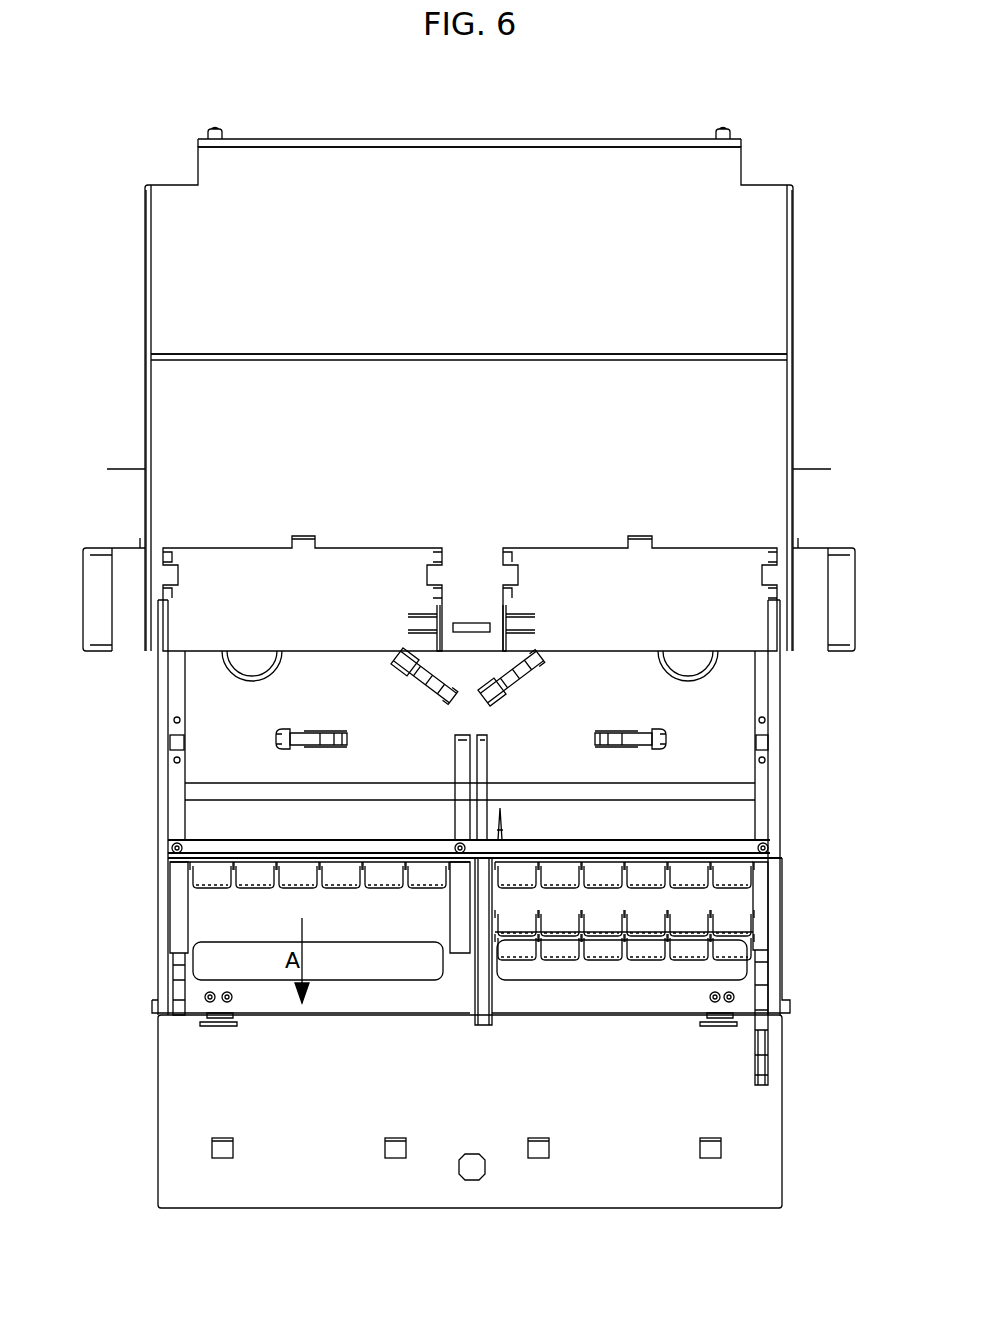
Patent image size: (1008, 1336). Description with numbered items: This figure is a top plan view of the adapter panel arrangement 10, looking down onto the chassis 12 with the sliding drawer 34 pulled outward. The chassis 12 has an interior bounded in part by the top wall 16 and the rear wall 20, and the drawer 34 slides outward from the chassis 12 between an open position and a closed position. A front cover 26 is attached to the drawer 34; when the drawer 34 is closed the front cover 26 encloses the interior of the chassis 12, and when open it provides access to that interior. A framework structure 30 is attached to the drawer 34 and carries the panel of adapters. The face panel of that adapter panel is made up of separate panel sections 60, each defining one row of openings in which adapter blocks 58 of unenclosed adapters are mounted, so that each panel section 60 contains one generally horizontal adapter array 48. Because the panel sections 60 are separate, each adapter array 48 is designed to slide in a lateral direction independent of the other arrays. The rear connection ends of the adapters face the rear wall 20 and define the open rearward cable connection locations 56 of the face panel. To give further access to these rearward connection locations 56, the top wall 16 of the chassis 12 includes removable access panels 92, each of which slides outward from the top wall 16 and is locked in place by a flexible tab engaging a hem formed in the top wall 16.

The adapter panel arrangement 10 is at (111, 357).
The chassis 12 is at (727, 423).
The top wall 16 is at (466, 428).
The rear wall 20 is at (551, 139).
The front cover 26 is at (294, 1175).
The framework structure 30 is at (765, 800).
The sliding drawer 34 is at (165, 922).
The adapter array 48 is at (762, 873).
The open rearward cable connection locations 56 is at (576, 832).
The adapter block 58 is at (688, 942).
The panel section 60 is at (208, 860).
The removable access panel 92 is at (316, 612).